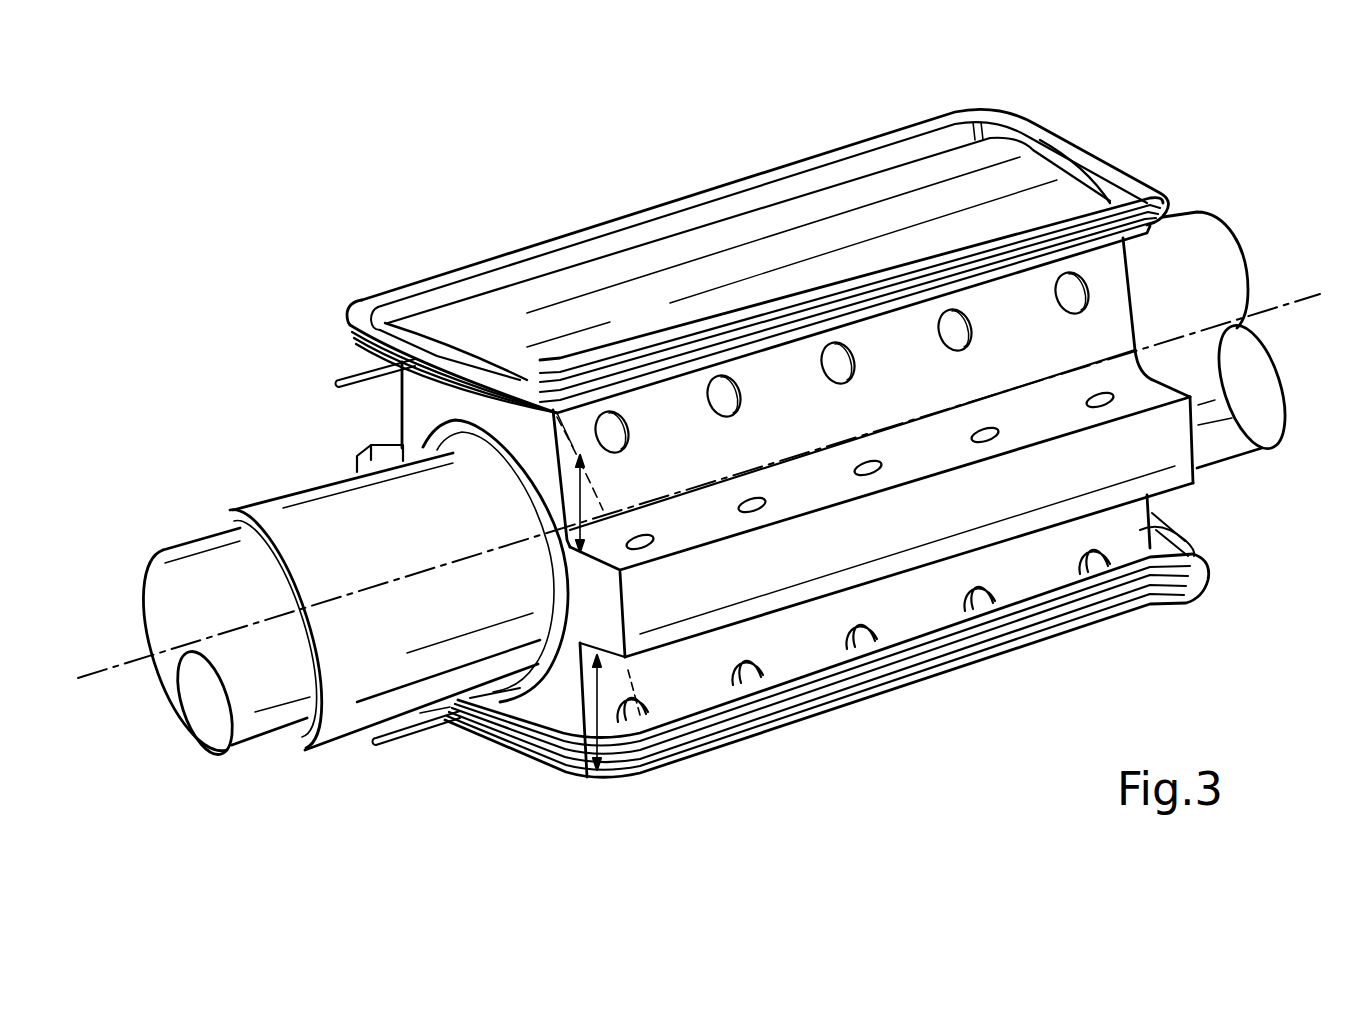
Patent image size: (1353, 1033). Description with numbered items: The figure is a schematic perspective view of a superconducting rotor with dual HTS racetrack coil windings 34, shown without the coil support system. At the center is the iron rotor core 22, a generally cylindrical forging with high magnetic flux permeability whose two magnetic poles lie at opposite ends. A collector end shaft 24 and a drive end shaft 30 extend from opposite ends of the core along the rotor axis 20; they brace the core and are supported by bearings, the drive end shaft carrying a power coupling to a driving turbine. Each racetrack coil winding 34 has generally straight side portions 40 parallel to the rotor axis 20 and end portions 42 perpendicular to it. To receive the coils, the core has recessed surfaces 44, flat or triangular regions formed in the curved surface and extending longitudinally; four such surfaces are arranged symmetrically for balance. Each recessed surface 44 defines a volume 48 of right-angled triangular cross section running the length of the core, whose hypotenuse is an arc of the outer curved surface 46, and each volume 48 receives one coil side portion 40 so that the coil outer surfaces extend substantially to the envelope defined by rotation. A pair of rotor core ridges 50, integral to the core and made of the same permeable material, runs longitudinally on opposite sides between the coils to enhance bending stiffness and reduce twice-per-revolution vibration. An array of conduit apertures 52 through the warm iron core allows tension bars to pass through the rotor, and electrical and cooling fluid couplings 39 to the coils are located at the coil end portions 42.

The rotor axis 20 is at (1307, 293).
The rotor core 22 is at (812, 253).
The collector end shaft 24 is at (321, 510).
The drive end shaft 30 is at (1213, 437).
The HTS racetrack coil winding 34 is at (962, 120).
The electrical and cooling fluid couplings 39 is at (360, 377).
The side portion 40 is at (560, 260).
The end portion 42 is at (410, 293).
The recessed surface 44 is at (665, 475).
The outer curved surface 46 is at (622, 313).
The volume 48 is at (598, 593).
The rotor core ridge 50 is at (383, 447).
The conduit aperture 52 is at (862, 360).